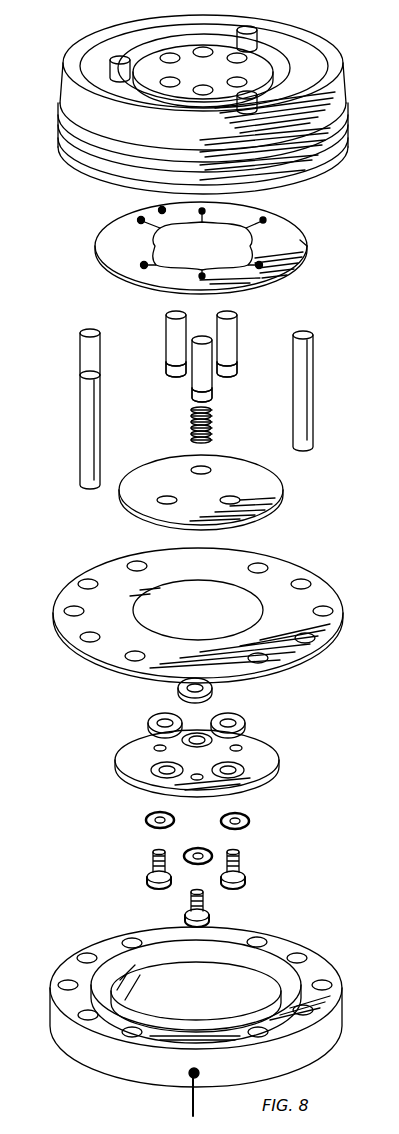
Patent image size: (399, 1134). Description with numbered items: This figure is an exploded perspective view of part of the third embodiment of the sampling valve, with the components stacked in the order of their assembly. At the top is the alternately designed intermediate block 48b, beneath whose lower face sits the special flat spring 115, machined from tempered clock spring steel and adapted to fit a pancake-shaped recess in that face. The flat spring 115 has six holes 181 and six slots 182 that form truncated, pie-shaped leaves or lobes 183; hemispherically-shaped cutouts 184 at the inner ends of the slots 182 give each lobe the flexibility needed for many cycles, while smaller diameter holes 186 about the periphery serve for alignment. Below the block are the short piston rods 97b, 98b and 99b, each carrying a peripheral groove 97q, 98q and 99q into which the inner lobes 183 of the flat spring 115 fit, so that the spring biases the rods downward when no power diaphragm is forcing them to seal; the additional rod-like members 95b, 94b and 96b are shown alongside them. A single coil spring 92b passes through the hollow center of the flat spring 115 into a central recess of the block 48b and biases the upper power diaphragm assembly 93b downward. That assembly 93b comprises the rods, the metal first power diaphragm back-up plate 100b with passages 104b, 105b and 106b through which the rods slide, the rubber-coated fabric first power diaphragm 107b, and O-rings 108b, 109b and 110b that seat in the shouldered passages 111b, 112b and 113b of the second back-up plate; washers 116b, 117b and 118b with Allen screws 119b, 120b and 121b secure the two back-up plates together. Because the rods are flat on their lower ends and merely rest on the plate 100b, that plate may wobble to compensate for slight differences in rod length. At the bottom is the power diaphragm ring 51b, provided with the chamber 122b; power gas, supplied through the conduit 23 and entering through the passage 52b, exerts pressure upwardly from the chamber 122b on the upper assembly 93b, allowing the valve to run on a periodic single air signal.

The intermediate block 48b is at (318, 48).
The flat spring 115 is at (100, 267).
The smaller diameter holes 186 is at (160, 208).
The slots 182 is at (140, 222).
The lobes 183 is at (307, 245).
The hemispherically-shaped cutouts 184 is at (162, 270).
The holes 181 is at (250, 282).
The pin end 95b is at (80, 352).
The pin 94b is at (82, 412).
The short piston rod 97b is at (168, 321).
The peripheral groove 97q is at (168, 366).
The short piston rod 98b is at (237, 322).
The peripheral groove 98q is at (236, 366).
The short piston rod 99b is at (214, 372).
The peripheral groove 99q is at (193, 392).
The pin 96b is at (313, 352).
The coil spring 92b is at (214, 410).
The first power diaphragm back-up plate 100b is at (277, 486).
The passage 105b is at (207, 468).
The passage 104b is at (157, 500).
The passage 106b is at (240, 500).
The first power diaphragm 107b is at (108, 660).
The upper power diaphragm assembly 93b is at (100, 716).
The O-ring 108b is at (160, 712).
The O-ring 109b is at (213, 688).
The O-ring 110b is at (246, 722).
The shouldered passage 111b is at (152, 762).
The shouldered passage 112b is at (262, 744).
The shouldered passage 113b is at (258, 766).
The washer 116b is at (188, 852).
The washer 117b is at (146, 820).
The washer 118b is at (246, 822).
The Allen screw 119b is at (190, 904).
The Allen screw 120b is at (152, 868).
The Allen screw 121b is at (242, 866).
The power diaphragm ring 51b is at (297, 942).
The chamber 122b is at (217, 1014).
The passage 52b is at (204, 1080).
The conduit 23 is at (190, 1100).